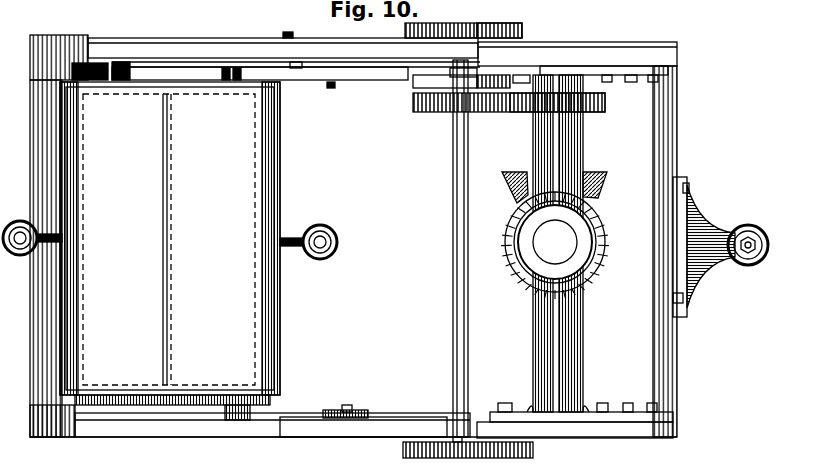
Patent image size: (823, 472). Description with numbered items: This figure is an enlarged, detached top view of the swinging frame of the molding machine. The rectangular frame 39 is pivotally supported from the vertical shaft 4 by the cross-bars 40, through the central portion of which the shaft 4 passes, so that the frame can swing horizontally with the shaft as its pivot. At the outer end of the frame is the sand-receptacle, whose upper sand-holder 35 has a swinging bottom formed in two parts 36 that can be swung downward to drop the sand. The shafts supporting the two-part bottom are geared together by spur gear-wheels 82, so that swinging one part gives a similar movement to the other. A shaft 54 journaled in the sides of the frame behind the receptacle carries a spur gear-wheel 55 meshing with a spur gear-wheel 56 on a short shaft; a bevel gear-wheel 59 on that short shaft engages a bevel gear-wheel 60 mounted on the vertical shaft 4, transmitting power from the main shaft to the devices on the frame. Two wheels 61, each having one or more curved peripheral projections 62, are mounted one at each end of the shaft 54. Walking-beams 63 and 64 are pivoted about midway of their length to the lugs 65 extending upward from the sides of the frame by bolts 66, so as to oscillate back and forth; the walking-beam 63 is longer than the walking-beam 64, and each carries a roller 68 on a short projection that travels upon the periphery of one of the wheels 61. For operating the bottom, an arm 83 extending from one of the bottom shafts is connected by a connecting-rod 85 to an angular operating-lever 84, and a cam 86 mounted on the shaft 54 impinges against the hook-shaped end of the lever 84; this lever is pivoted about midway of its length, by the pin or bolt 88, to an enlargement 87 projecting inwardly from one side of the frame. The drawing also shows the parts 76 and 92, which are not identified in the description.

The vertical shaft 4 is at (552, 247).
The upper sand-holder 35 is at (282, 322).
The swinging bottom parts 36 is at (169, 239).
The rectangular frame 39 is at (128, 425).
The cross-bars 40 is at (565, 350).
The shaft 54 is at (453, 322).
The spur gear-wheel 55 is at (437, 112).
The spur gear-wheel 56 is at (510, 112).
The bevel gear-wheel 59 is at (597, 183).
The bevel gear-wheel 60 is at (606, 240).
The wheels 61 is at (405, 30).
The curved peripheral projections 62 is at (510, 73).
The walking-beam 63 is at (140, 50).
The walking-beam 64 is at (288, 428).
The lugs 65 is at (297, 63).
The bolts 66 is at (288, 32).
The roller 68 is at (440, 17).
The knobs 76 is at (20, 256).
The spur gear-wheels 82 is at (87, 403).
The arm 83 is at (226, 68).
The angular operating-lever 84 is at (380, 80).
The connecting-rod 85 is at (238, 68).
The cam 86 is at (540, 46).
The enlargement 87 is at (340, 66).
The pin or bolt 88 is at (331, 88).
The adjusting knob 92 is at (770, 253).